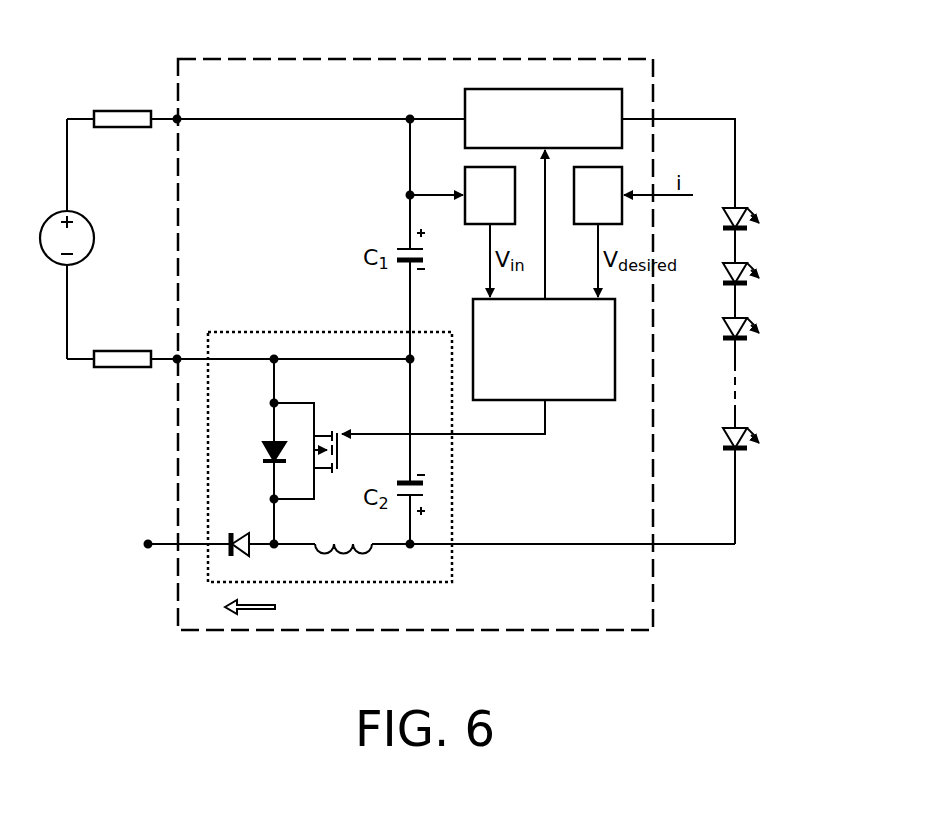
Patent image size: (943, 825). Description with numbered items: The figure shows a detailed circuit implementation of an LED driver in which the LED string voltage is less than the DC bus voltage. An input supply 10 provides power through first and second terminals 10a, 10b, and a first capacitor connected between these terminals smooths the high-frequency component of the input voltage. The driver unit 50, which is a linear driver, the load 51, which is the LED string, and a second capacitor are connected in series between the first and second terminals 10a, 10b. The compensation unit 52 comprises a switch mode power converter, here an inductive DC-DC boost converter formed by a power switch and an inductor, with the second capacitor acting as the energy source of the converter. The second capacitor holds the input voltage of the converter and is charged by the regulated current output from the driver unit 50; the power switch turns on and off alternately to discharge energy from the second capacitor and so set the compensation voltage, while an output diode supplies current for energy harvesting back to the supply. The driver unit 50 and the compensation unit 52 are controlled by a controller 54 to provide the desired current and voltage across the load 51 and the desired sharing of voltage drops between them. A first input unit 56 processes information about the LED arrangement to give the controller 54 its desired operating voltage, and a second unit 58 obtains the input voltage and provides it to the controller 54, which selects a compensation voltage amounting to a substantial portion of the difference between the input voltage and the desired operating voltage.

The input supply 10 is at (92, 222).
The first terminal 10a is at (177, 119).
The second terminal 10b is at (177, 359).
The driver unit 50 is at (532, 131).
The load 51 is at (762, 178).
The compensation unit 52 is at (305, 332).
The controller 54 is at (531, 362).
The first input unit 56 is at (585, 207).
The second unit 58 is at (477, 207).